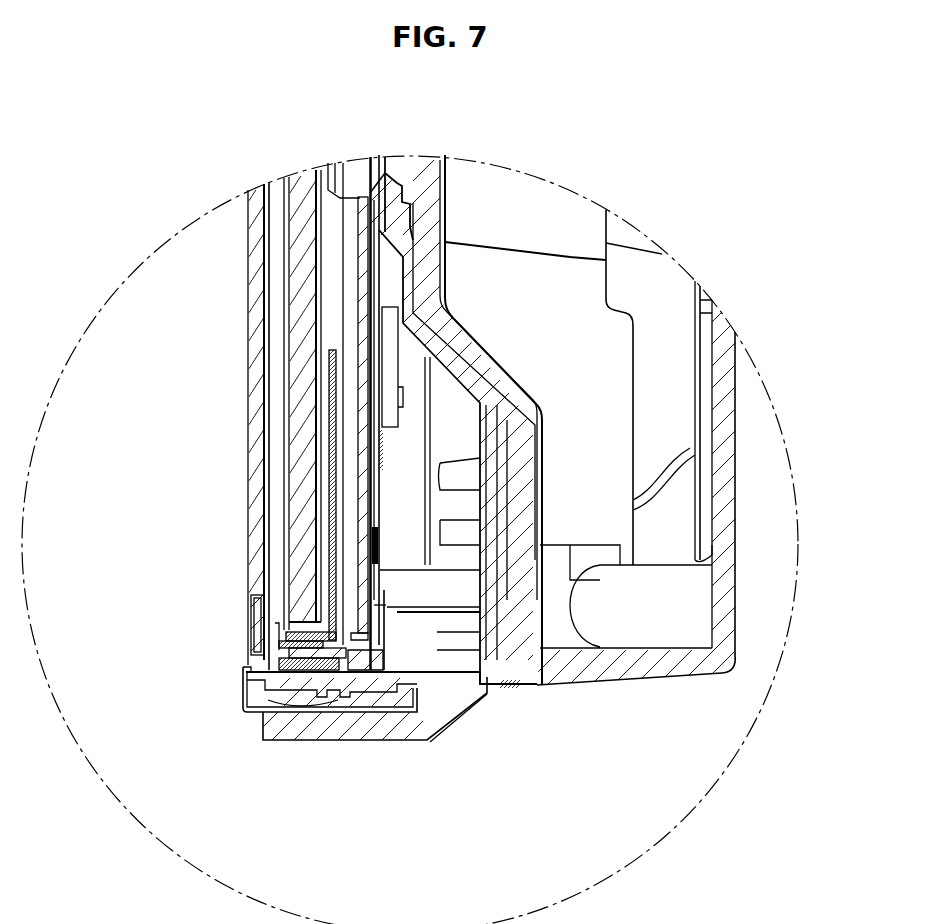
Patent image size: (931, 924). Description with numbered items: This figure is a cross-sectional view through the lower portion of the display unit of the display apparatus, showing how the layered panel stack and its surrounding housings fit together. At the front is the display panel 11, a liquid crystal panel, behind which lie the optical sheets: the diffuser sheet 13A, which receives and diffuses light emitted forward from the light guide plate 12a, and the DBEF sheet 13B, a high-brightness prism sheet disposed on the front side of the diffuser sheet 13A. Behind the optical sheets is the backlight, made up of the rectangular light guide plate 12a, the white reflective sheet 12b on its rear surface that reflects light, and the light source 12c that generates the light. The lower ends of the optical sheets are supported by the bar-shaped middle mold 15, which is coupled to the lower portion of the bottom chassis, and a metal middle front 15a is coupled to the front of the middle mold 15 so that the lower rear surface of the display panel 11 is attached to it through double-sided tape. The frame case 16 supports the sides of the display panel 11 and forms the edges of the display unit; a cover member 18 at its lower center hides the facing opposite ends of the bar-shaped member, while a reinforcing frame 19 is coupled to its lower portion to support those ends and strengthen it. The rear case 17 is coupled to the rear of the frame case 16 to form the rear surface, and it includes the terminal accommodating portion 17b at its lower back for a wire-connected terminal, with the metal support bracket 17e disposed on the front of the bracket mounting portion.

The display panel 11 is at (258, 482).
The light guide plate 12a is at (303, 412).
The white reflective sheet 12b is at (325, 440).
The light source 12c is at (298, 620).
The diffuser sheet 13A is at (290, 540).
The DBEF sheet 13B is at (288, 572).
The middle mold 15 is at (302, 665).
The middle front 15a is at (279, 648).
The frame case 16 is at (265, 692).
The rear case 17 is at (521, 692).
The terminal accommodating portion 17b is at (443, 218).
The support bracket 17e is at (727, 457).
The cover member 18 is at (243, 690).
The reinforcing frame 19 is at (363, 692).